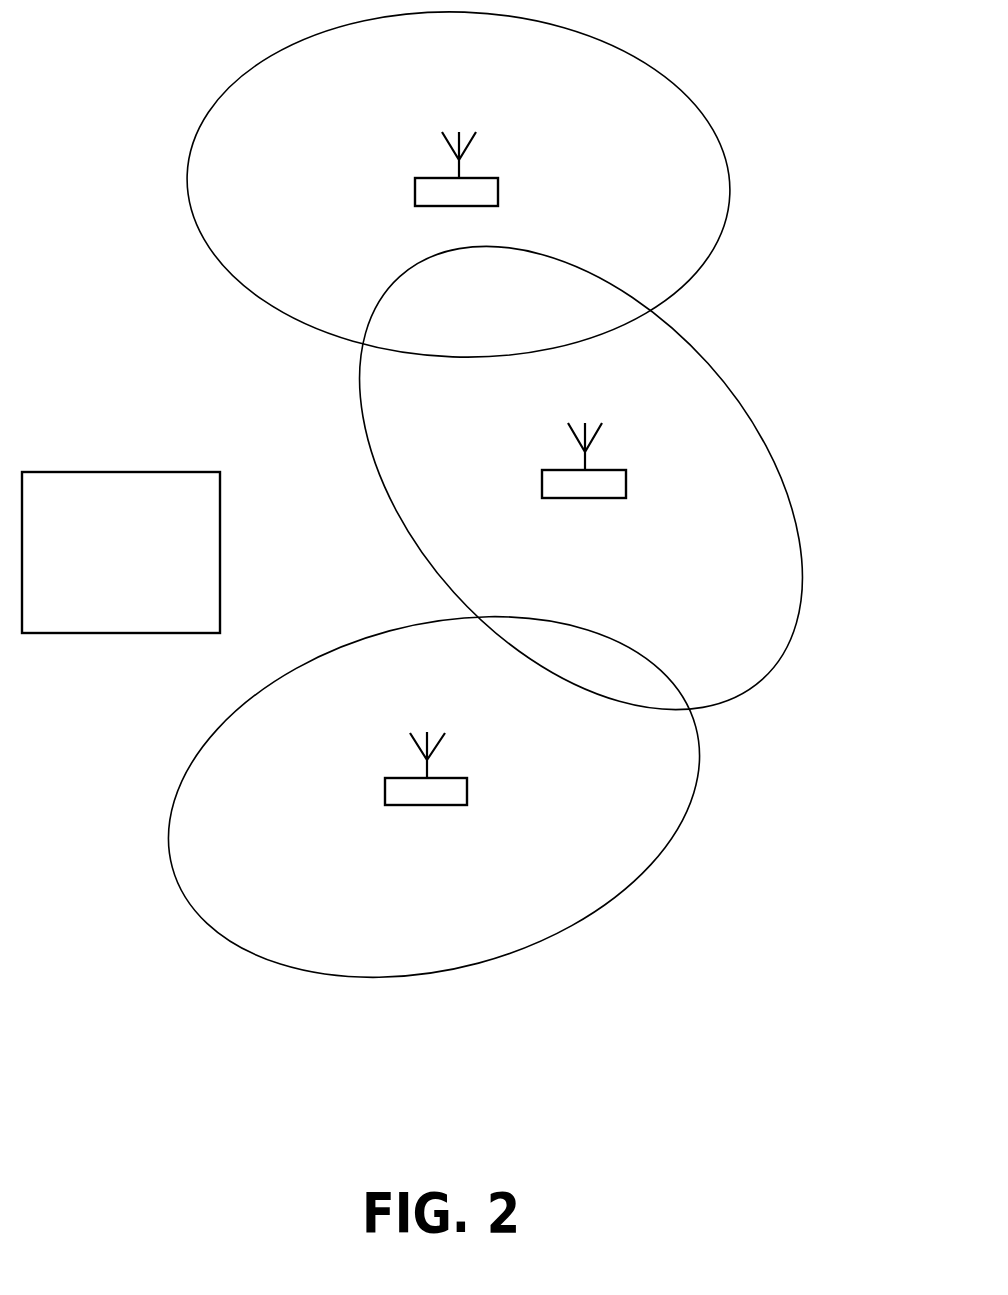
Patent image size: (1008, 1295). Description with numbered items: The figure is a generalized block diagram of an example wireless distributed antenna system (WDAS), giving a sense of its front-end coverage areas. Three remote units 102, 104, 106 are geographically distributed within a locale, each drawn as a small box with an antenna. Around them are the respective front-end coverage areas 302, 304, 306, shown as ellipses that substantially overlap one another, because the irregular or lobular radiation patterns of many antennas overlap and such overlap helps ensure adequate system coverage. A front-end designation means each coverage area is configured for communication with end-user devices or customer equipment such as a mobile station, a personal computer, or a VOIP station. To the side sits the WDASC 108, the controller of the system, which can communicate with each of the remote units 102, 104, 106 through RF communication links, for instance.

The remote unit 102 is at (498, 192).
The remote unit 104 is at (626, 483).
The remote unit 106 is at (467, 792).
The WDASC 108 is at (121, 552).
The front-end coverage area 302 is at (721, 141).
The front-end coverage area 304 is at (802, 590).
The front-end coverage area 306 is at (607, 906).